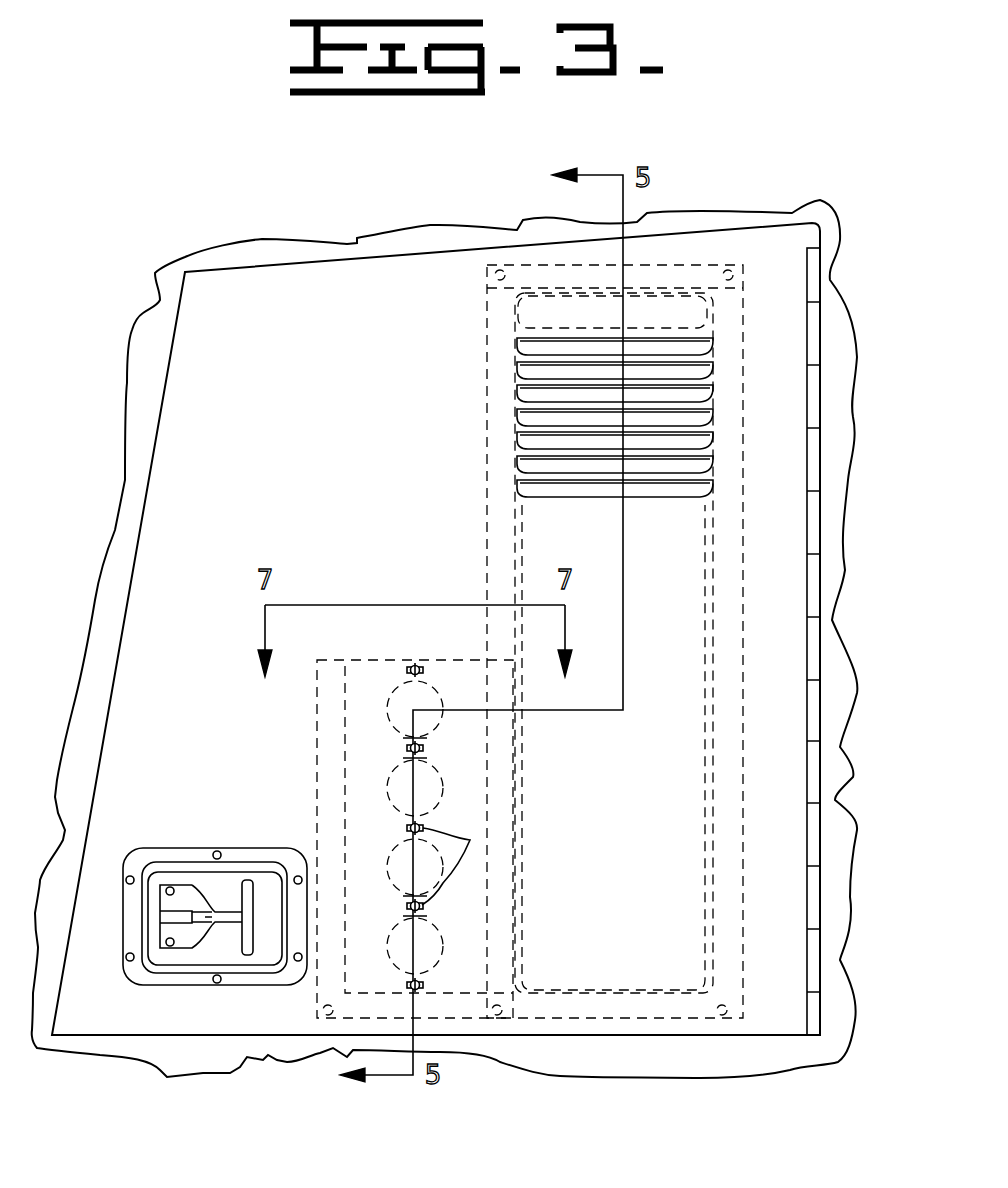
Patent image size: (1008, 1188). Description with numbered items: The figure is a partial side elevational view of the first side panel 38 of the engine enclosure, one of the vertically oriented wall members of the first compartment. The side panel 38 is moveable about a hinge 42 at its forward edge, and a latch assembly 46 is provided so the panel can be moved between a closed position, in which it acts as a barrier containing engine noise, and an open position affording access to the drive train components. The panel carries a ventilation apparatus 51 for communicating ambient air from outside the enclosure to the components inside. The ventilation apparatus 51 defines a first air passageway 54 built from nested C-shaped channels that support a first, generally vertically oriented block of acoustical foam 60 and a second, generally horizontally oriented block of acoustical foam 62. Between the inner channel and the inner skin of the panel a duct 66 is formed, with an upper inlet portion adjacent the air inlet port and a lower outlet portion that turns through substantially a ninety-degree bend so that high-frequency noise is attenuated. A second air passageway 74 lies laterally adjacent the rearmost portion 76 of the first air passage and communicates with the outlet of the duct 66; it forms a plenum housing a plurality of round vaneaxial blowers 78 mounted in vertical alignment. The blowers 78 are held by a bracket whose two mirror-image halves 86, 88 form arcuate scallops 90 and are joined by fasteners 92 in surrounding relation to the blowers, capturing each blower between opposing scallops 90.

The side panel 38 is at (362, 323).
The hinge 42 is at (835, 598).
The latch assembly 46 is at (198, 846).
The ventilation apparatus 51 is at (467, 435).
The first air passageway 54 is at (723, 442).
The first block of acoustical foam 60 is at (708, 826).
The second block of acoustical foam 62 is at (637, 318).
The duct 66 is at (513, 495).
The second air passageway 74 is at (378, 660).
The rearmost portion of the first air passage 76 is at (505, 893).
The blowers 78 is at (425, 697).
The bracket half 86 is at (390, 962).
The bracket half 88 is at (438, 958).
The arcuate scallops 90 is at (404, 750).
The fasteners 92 is at (464, 864).